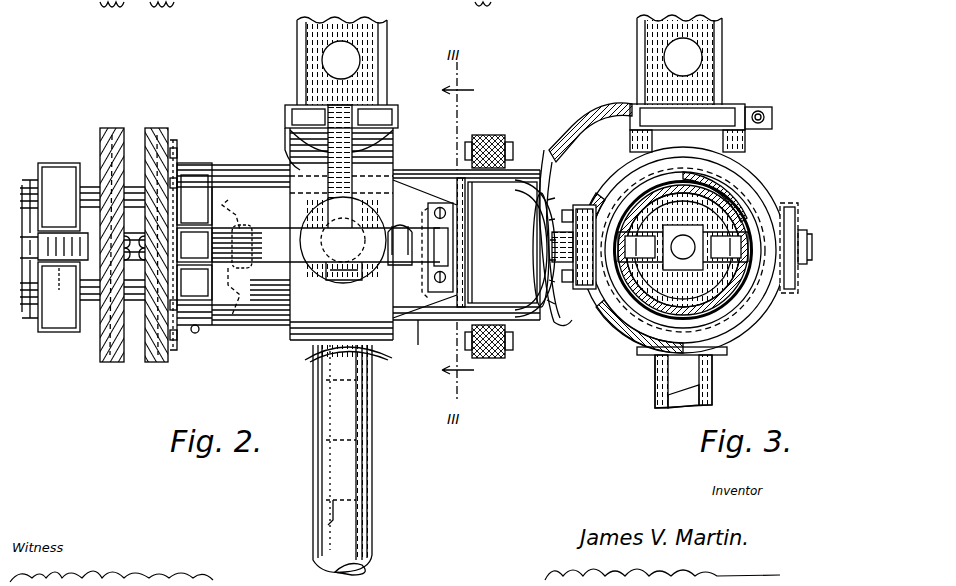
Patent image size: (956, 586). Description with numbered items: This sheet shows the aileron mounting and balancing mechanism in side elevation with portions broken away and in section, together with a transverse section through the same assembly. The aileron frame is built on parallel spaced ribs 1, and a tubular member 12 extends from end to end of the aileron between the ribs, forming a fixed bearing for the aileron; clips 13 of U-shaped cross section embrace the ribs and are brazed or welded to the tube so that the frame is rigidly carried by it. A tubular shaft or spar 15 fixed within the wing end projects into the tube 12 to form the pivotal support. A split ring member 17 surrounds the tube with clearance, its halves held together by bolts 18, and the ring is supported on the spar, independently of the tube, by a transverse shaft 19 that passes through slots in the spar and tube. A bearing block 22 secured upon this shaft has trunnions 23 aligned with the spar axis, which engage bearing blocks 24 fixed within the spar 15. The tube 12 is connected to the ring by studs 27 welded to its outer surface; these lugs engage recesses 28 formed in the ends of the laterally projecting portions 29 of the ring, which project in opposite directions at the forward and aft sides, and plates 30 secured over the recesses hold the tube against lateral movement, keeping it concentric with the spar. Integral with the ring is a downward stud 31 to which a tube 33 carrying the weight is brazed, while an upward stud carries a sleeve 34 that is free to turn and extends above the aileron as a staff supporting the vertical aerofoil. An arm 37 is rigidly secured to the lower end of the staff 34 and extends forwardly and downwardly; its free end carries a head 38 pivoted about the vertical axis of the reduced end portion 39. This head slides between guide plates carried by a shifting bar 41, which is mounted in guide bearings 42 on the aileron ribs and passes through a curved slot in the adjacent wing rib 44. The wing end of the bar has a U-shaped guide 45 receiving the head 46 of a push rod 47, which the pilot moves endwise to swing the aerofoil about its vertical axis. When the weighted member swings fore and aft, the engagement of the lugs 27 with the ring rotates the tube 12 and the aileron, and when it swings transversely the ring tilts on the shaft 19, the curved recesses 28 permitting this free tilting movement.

In FIG. 2, the ribs 1 is at (490, 135).
In FIG. 2, the tubular member 12 is at (466, 245).
In FIG. 3, the tubular member 12 is at (700, 190).
In FIG. 2, the clips 13 is at (505, 150).
In FIG. 2, the tubular shaft or spar 15 is at (78, 188).
In FIG. 3, the tubular shaft or spar 15 is at (558, 292).
In FIG. 2, the split ring member 17 is at (395, 160).
In FIG. 2, the bolts 18 is at (258, 215).
In FIG. 3, the transverse shaft 19 is at (650, 290).
In FIG. 3, the bearing block 22 is at (675, 270).
In FIG. 3, the trunnions 23 is at (700, 290).
In FIG. 3, the bearing blocks 24 is at (740, 300).
In FIG. 2, the studs 27 is at (455, 270).
In FIG. 3, the studs 27 is at (783, 203).
In FIG. 2, the recesses 28 is at (233, 325).
In FIG. 2, the laterally projecting portions 29 is at (245, 195).
In FIG. 2, the plates 30 is at (445, 292).
In FIG. 3, the plates 30 is at (573, 215).
In FIG. 2, the stud 31 is at (318, 517).
In FIG. 2, the tube 33 is at (372, 475).
In FIG. 3, the tube 33 is at (665, 398).
In FIG. 2, the sleeve 34 is at (380, 52).
In FIG. 3, the sleeve 34 is at (712, 50).
In FIG. 2, the arm 37 is at (315, 176).
In FIG. 3, the arm 37 is at (578, 108).
In FIG. 2, the head 38 is at (272, 262).
In FIG. 2, the reduced end portion 39 is at (340, 284).
In FIG. 2, the shifting bar 41 is at (215, 320).
In FIG. 2, the guide bearings 42 is at (194, 248).
In FIG. 2, the rib 44 is at (112, 128).
In FIG. 2, the U-shaped guide 45 is at (50, 197).
In FIG. 2, the head 46 is at (50, 297).
In FIG. 2, the push rod 47 is at (30, 180).